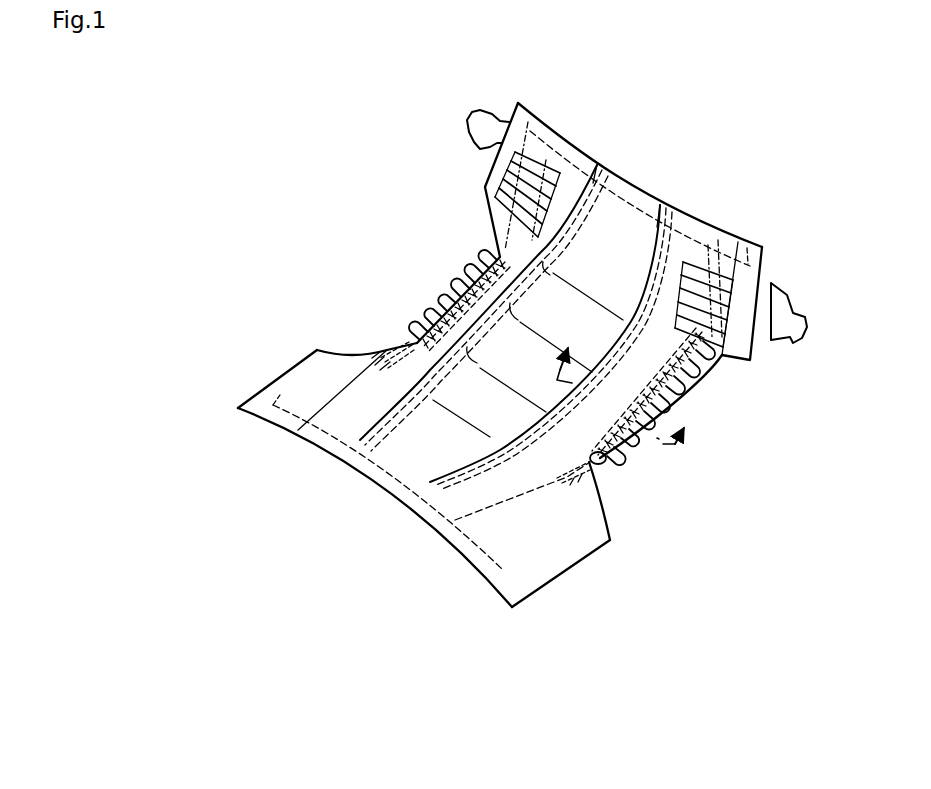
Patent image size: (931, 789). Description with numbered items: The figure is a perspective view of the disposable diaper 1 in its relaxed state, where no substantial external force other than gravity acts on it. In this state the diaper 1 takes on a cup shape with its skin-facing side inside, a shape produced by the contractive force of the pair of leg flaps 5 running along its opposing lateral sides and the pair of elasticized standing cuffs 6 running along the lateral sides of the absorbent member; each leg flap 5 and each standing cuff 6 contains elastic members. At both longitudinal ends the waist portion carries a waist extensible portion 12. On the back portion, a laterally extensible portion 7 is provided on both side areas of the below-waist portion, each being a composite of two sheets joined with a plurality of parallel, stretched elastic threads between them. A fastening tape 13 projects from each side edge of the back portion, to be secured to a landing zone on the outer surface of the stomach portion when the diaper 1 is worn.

The disposable diaper 1 is at (627, 589).
The leg flap 5 is at (416, 312).
The standing cuff 6 is at (630, 309).
The laterally extensible portion 7 is at (552, 164).
The waist extensible portion 12 is at (620, 187).
The fastening tape 13 is at (481, 113).